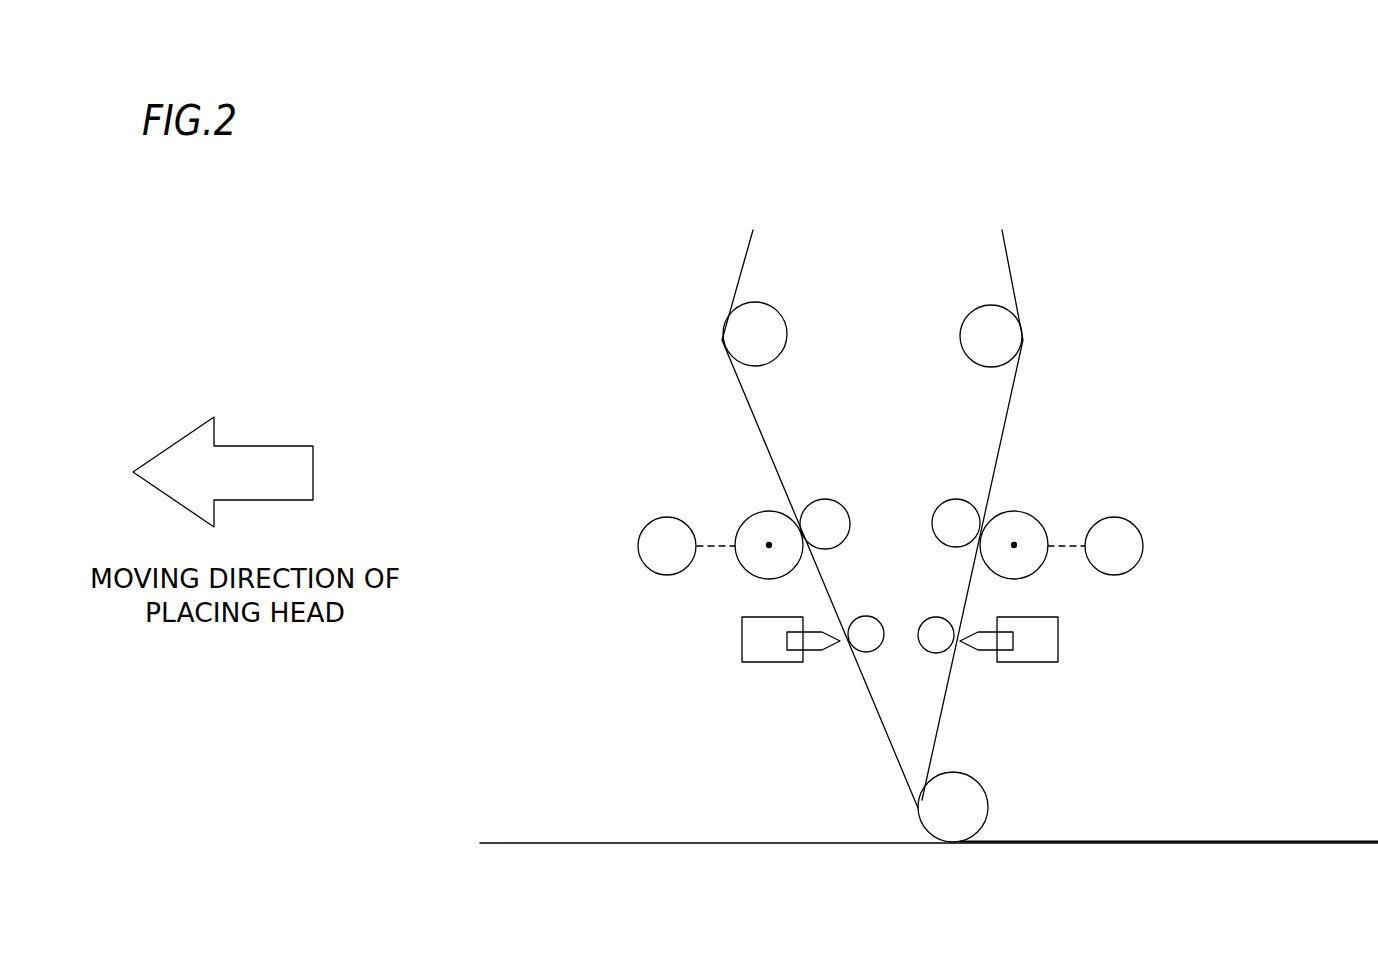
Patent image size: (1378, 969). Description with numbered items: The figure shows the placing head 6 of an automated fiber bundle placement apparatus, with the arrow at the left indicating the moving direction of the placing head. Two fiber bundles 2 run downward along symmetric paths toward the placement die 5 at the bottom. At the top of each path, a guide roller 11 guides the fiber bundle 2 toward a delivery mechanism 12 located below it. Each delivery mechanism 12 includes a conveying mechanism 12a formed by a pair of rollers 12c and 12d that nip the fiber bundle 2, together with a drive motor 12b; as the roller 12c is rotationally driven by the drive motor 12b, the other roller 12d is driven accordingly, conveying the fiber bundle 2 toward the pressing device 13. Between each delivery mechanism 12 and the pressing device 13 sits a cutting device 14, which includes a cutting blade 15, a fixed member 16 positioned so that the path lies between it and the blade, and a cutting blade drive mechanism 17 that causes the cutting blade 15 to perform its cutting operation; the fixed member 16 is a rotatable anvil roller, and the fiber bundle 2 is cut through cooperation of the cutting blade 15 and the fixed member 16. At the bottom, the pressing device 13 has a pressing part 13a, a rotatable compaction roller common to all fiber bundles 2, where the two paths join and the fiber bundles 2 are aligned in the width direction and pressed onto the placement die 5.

The fiber bundle 2 is at (747, 405).
The placement die 5 is at (583, 842).
The placing head 6 is at (1207, 242).
The guide roller 11 is at (789, 328).
The delivery mechanism 12 is at (630, 597).
The conveying mechanism 12a is at (713, 597).
The drive motor 12b is at (655, 528).
The roller 12c is at (750, 512).
The roller 12d is at (826, 520).
The pressing device 13 is at (1023, 778).
The pressing part 13a is at (988, 800).
The cutting device 14 is at (723, 728).
The cutting blade 15 is at (818, 652).
The fixed member 16 is at (865, 617).
The cutting blade drive mechanism 17 is at (743, 663).